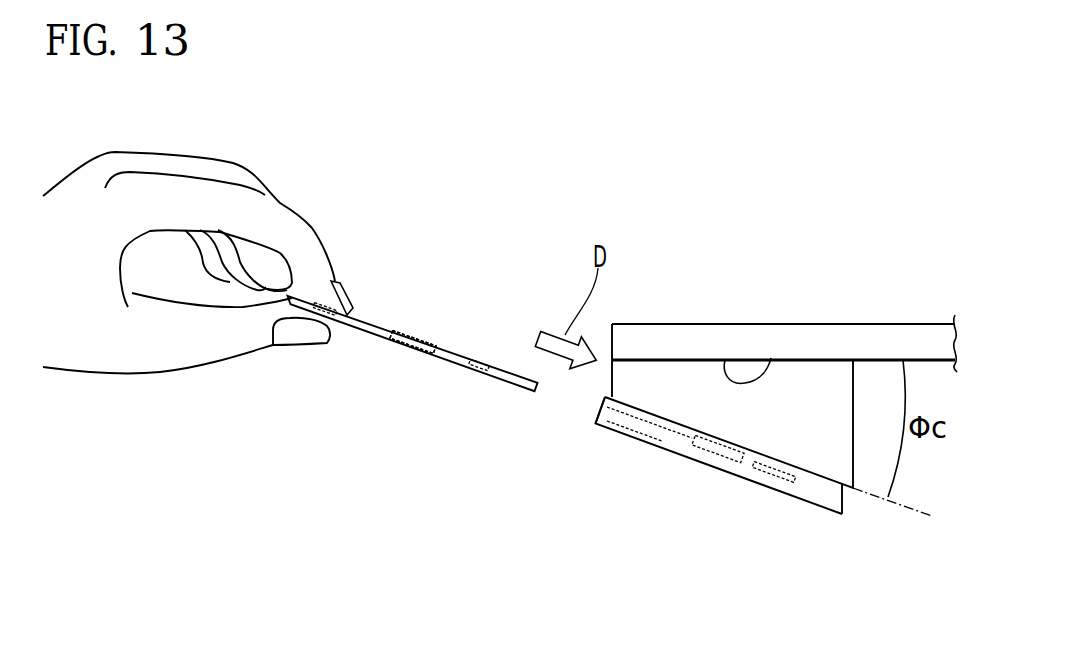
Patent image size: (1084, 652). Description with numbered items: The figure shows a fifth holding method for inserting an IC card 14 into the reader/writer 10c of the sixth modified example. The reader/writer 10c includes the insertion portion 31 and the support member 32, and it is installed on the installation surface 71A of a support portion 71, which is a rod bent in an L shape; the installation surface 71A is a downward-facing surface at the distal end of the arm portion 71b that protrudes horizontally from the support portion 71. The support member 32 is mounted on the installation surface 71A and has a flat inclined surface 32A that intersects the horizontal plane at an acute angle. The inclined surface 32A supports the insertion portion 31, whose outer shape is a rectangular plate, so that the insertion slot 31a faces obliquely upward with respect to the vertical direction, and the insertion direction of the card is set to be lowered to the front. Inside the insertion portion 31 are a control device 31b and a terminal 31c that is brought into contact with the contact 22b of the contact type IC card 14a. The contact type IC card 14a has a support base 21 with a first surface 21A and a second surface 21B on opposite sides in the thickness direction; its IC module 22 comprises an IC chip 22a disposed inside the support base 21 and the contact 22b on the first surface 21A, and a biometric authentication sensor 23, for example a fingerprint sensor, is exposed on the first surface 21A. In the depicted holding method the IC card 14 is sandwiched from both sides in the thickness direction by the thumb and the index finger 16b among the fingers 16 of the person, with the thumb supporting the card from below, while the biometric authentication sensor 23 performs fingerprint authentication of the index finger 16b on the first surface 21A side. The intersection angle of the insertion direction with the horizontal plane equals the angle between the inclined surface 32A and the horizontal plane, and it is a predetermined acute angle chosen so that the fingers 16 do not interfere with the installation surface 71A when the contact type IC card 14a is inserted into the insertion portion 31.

The reader/writer 10c is at (480, 515).
The IC card 14 is at (413, 398).
The contact type IC card 14a is at (503, 386).
The fingers 16 is at (313, 209).
The index finger 16b is at (336, 283).
The support base 21 is at (362, 321).
The first surface 21A is at (392, 332).
The second surface 21B is at (418, 342).
The IC module 22 is at (567, 212).
The IC chip 22a is at (418, 332).
The contact 22b is at (483, 358).
The biometric authentication sensor 23 is at (338, 306).
The insertion portion 31 is at (650, 450).
The insertion slot 31a is at (600, 410).
The control device 31b is at (773, 475).
The terminal 31c is at (700, 437).
The support member 32 is at (798, 383).
The inclined surface 32A is at (818, 478).
The support portion 71 is at (784, 283).
The installation surface 71A is at (725, 360).
The arm portion 71b is at (770, 337).